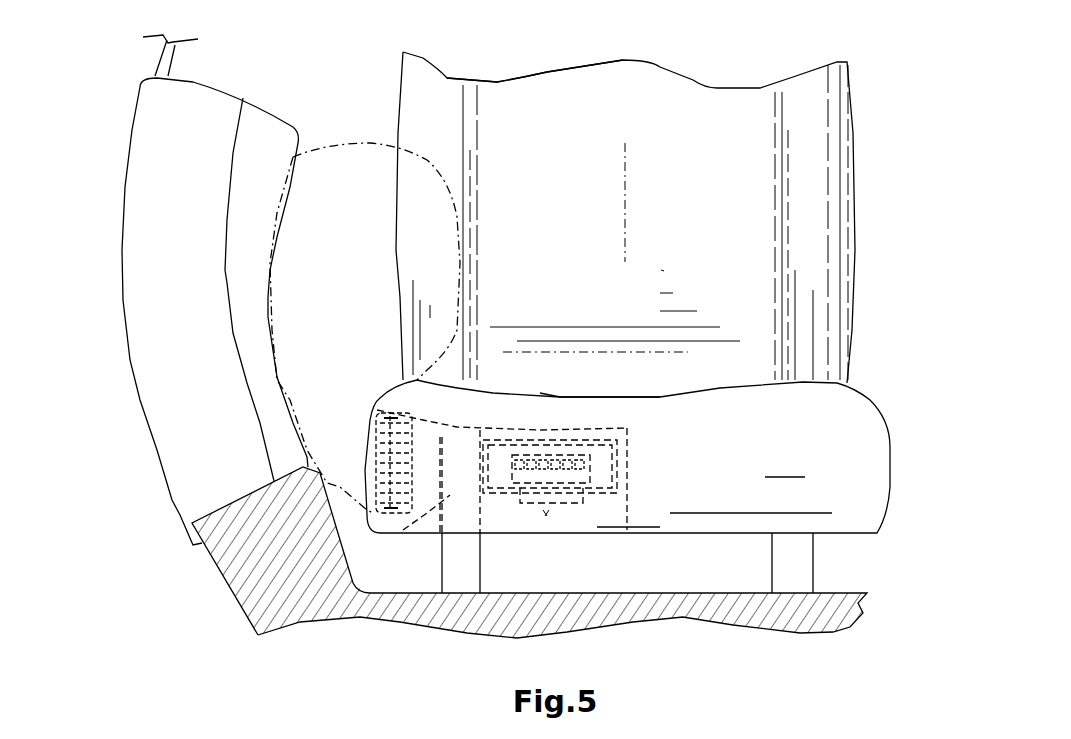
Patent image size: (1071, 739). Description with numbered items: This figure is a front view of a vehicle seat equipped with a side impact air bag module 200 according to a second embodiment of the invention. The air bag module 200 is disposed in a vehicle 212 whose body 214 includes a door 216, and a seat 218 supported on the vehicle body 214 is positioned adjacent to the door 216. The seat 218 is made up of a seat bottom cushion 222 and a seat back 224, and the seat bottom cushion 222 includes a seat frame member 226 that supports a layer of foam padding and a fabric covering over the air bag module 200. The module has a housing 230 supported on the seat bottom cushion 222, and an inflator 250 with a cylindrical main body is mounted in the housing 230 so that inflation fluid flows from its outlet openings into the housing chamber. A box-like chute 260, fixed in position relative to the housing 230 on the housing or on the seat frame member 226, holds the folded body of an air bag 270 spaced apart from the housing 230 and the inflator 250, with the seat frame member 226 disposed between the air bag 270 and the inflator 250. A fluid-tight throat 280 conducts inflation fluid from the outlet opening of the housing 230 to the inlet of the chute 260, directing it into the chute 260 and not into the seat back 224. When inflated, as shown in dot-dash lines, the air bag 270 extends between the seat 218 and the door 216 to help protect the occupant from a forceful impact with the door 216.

The air bag module 200 is at (517, 421).
The vehicle 212 is at (122, 365).
The body 214 is at (221, 590).
The door 216 is at (122, 250).
The seat 218 is at (705, 80).
The seat bottom cushion 222 is at (867, 397).
The seat back 224 is at (545, 72).
The seat frame member 226 is at (403, 530).
The housing 230 is at (627, 462).
The inflator 250 is at (590, 477).
The chute 260 is at (373, 453).
The air bag 270 is at (338, 152).
The throat 280 is at (440, 437).